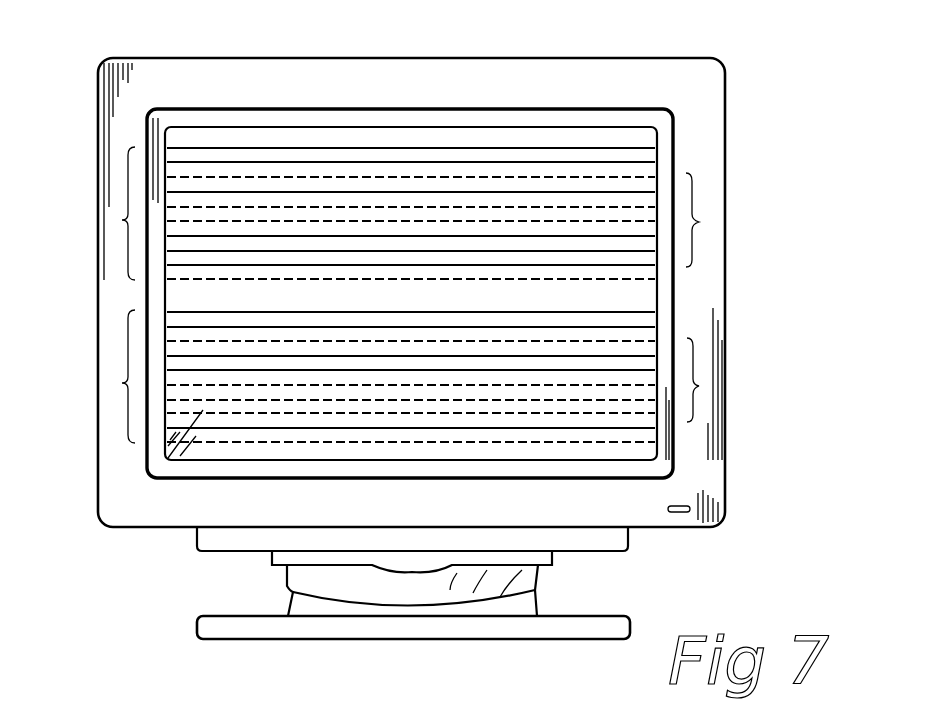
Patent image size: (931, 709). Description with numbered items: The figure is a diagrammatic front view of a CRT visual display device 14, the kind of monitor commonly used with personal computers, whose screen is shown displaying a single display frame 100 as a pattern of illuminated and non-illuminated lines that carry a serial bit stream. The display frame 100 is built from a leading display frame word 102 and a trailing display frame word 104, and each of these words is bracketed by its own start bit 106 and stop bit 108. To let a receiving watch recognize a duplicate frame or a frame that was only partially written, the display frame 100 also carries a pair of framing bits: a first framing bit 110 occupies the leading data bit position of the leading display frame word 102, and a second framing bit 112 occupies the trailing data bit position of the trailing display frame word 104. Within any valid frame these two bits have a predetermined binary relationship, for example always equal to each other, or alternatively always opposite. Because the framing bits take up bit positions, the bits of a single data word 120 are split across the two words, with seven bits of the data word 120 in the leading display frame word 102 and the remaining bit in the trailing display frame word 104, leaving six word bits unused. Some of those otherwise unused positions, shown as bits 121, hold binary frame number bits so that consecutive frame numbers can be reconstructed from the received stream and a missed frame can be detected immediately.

The visual display device 14 is at (707, 343).
The display frame 100 is at (650, 114).
The leading display frame word 102 is at (127, 220).
The trailing display frame word 104 is at (127, 383).
The start bit 106 is at (618, 147).
The stop bit 108 is at (345, 280).
The first framing bit 110 is at (645, 162).
The second framing bit 112 is at (643, 428).
The data word 120 is at (637, 327).
The frame number bits 121 is at (699, 386).